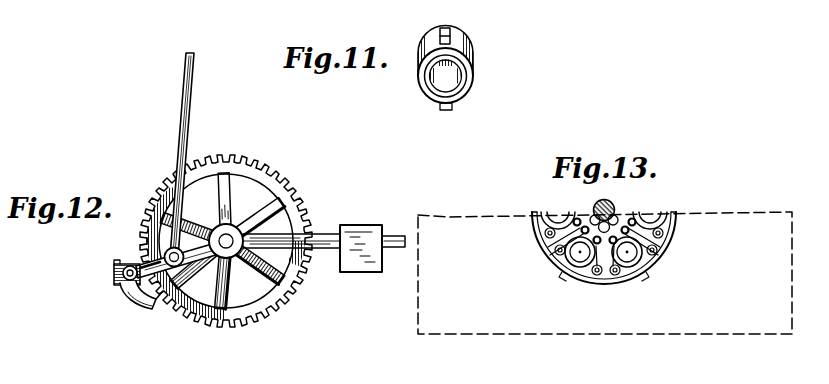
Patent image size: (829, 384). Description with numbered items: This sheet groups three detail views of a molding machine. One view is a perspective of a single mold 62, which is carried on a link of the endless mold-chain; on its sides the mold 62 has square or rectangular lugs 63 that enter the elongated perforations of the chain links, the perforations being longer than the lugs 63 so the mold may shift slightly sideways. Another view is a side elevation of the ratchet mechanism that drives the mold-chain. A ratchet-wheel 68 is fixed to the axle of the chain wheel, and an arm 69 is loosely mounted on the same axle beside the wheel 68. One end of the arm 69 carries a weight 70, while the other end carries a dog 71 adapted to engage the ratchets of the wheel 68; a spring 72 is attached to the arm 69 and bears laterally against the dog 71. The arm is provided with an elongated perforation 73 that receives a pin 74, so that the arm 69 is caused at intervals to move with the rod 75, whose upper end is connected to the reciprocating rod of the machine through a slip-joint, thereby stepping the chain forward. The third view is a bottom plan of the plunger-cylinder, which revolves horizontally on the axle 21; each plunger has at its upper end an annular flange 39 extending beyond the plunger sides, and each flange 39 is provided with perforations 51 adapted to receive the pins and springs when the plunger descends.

In FIG. 11, the mold 62 is at (476, 60).
In FIG. 11, the lugs 63 is at (451, 29).
In FIG. 12, the ratchet-wheel 68 is at (290, 185).
In FIG. 12, the arm 69 is at (243, 262).
In FIG. 12, the weight 70 is at (324, 267).
In FIG. 12, the dog 71 is at (161, 310).
In FIG. 12, the spring 72 is at (124, 305).
In FIG. 12, the elongated perforation 73 is at (128, 270).
In FIG. 12, the pin 74 is at (130, 241).
In FIG. 12, the rod 75 is at (194, 96).
In FIG. 13, the axle 21 is at (638, 250).
In FIG. 13, the annular flange 39 is at (625, 268).
In FIG. 13, the perforations 51 is at (614, 274).